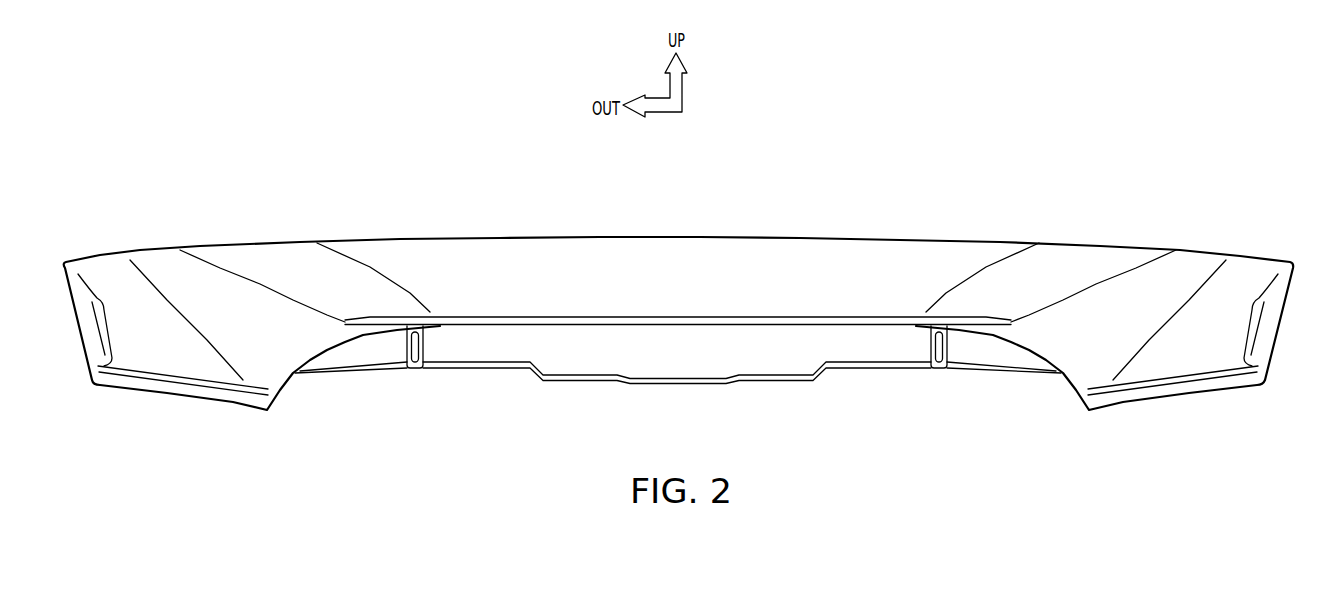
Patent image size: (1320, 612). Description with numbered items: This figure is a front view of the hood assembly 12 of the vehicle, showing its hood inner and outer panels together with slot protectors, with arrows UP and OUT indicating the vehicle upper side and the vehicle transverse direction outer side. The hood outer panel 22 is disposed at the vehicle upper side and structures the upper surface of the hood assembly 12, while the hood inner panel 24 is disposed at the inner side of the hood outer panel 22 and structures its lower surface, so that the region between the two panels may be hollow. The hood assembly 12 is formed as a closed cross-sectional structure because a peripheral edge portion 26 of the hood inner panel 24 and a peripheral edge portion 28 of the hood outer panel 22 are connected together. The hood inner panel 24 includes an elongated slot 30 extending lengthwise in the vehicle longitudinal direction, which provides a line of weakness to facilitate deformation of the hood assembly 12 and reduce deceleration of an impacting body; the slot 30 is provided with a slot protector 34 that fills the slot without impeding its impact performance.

The hood assembly 12 is at (857, 181).
The hood outer panel 22 is at (490, 252).
The hood inner panel 24 is at (770, 353).
The peripheral edge portion 26 is at (1267, 402).
The peripheral edge portion 28 is at (99, 313).
The elongated slot 30 is at (407, 347).
The slot protector 34 is at (415, 368).